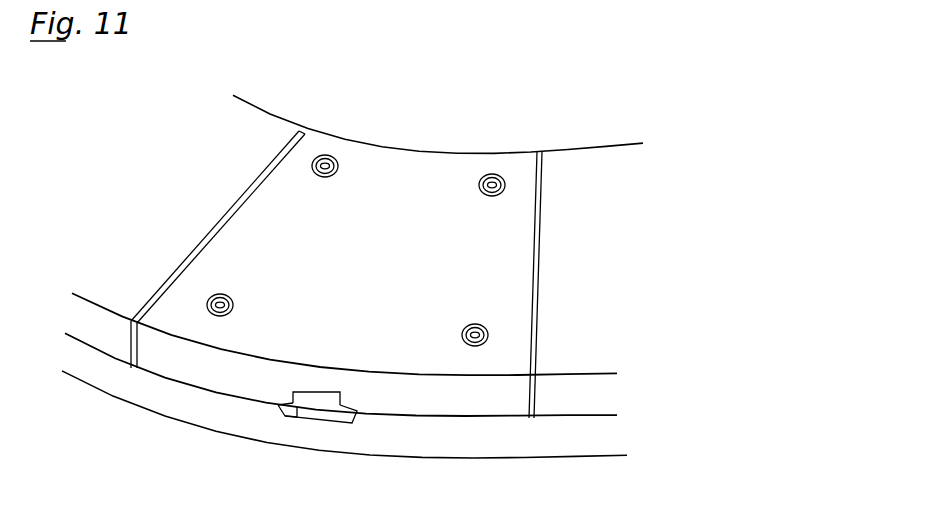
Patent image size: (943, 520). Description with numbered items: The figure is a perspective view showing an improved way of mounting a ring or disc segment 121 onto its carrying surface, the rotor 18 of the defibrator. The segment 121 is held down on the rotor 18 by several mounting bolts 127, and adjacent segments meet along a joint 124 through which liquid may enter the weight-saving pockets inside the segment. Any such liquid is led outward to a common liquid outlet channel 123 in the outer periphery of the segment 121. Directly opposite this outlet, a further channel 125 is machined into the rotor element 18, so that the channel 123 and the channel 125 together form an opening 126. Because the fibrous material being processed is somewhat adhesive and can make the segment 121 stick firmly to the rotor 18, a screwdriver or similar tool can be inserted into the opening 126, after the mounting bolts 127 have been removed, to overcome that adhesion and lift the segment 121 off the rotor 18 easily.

The rotor 18 is at (532, 443).
The disc segment 121 is at (520, 228).
The liquid outlet channel 123 is at (323, 400).
The joint 124 is at (300, 147).
The channel 125 is at (322, 413).
The opening 126 is at (300, 412).
The mounting bolt 127 is at (340, 171).